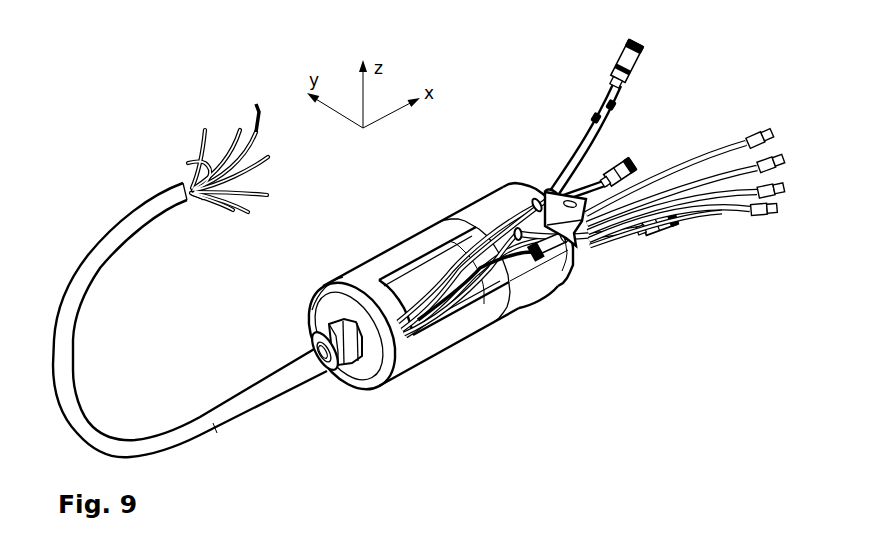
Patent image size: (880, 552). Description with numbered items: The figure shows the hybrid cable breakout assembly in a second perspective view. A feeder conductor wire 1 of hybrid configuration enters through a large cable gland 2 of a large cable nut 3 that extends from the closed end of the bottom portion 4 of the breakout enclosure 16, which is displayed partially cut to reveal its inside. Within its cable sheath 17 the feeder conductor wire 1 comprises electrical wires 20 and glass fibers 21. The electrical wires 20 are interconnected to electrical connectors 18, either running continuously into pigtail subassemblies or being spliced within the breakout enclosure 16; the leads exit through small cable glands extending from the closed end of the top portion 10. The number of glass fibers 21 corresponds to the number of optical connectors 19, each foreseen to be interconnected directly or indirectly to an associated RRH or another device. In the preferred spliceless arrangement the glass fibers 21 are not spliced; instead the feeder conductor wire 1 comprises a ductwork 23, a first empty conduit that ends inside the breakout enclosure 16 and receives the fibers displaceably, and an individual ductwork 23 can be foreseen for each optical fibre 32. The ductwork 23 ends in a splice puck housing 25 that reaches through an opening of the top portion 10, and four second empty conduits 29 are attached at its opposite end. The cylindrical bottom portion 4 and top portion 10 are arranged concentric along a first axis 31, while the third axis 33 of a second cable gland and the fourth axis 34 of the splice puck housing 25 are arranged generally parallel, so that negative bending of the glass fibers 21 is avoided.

The feeder conductor wire 1 is at (110, 194).
The large cable gland 2 is at (331, 384).
The large cable nut 3 is at (350, 373).
The bottom portion 4 is at (402, 360).
The top portion 10 is at (527, 258).
The breakout enclosure 16 is at (460, 373).
The cable sheath 17 is at (211, 502).
The electrical connectors 18 is at (643, 55).
The optical connectors 19 is at (762, 130).
The electrical wires 20 is at (176, 138).
The glass fibers 21 is at (231, 108).
The ductwork 23 is at (545, 250).
The splice puck housing 25 is at (560, 233).
The second empty conduits 29 is at (720, 208).
The first axis 31 is at (316, 340).
The optical fibre 32 is at (393, 315).
The third axis 33 is at (552, 189).
The fourth axis 34 is at (583, 243).